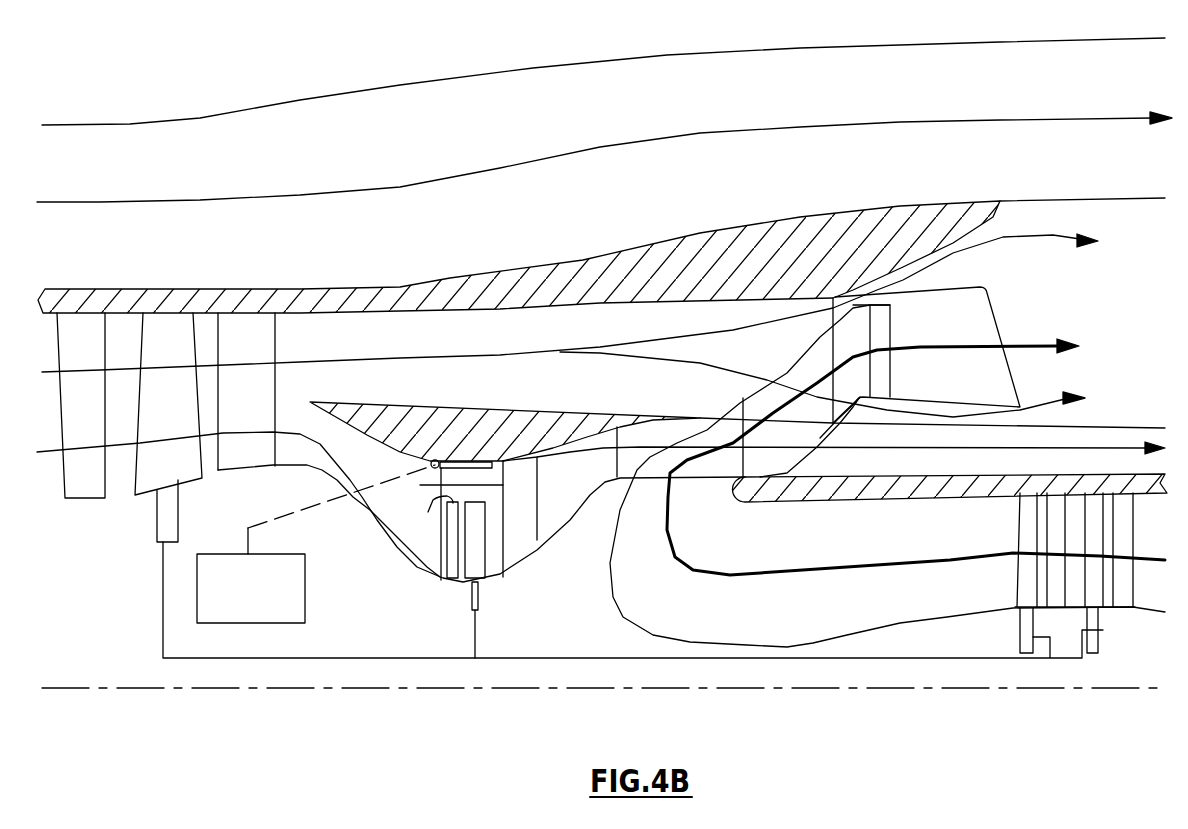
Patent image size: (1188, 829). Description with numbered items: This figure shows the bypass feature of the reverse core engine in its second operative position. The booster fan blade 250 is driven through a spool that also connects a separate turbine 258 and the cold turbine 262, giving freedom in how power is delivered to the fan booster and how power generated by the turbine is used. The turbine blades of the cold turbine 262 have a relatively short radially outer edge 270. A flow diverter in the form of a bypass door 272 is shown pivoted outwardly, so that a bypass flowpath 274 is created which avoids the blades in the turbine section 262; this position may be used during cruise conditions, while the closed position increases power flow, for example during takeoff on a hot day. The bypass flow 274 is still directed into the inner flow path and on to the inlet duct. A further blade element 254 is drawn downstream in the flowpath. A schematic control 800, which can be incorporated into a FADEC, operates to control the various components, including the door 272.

The booster fan blade 250 is at (160, 462).
The turbine blade 254 is at (953, 325).
The separate turbine 258 is at (1053, 577).
The cold turbine 262 is at (453, 557).
The radially outer edge 270 is at (430, 505).
The bypass door 272 is at (452, 460).
The bypass flowpath 274 is at (480, 487).
The schematic control 800 is at (228, 605).